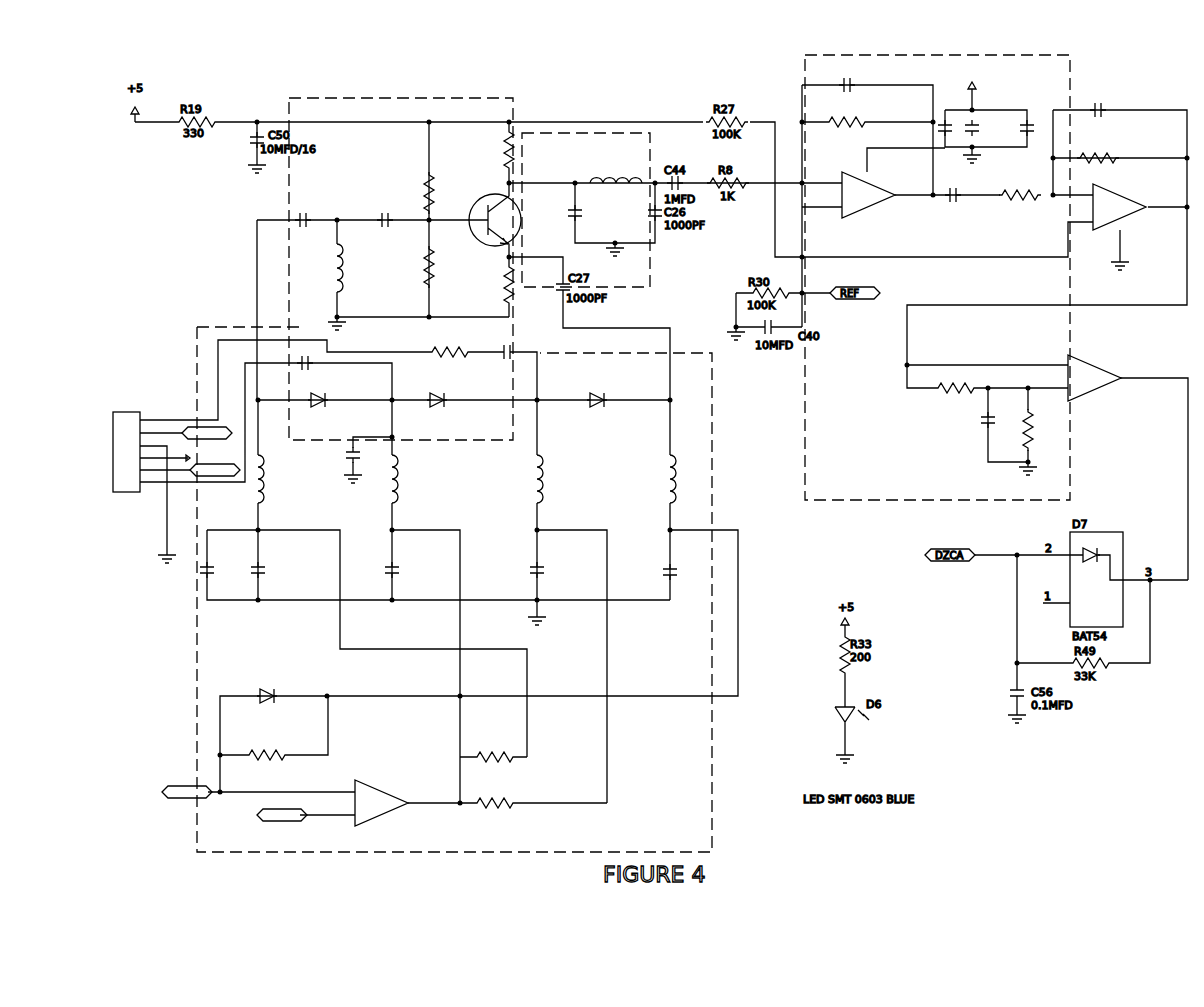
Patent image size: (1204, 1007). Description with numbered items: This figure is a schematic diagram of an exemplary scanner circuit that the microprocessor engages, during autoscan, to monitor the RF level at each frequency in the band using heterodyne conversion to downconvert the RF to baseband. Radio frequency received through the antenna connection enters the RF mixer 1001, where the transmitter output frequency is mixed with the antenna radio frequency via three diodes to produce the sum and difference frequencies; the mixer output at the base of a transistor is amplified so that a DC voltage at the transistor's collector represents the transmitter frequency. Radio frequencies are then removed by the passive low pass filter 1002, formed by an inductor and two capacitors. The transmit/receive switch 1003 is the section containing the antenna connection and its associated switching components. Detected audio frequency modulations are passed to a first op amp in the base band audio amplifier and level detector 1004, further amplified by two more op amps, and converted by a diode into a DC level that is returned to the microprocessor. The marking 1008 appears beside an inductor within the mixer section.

The RF mixer 1001 is at (398, 256).
The passive low pass filter 1002 is at (592, 210).
The transmit/receive switch 1003 is at (407, 589).
The base band audio amplifier and level detector 1004 is at (995, 317).
The inductor L12 1008 is at (363, 268).